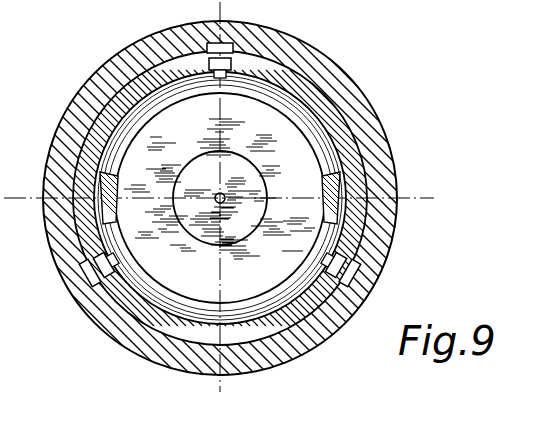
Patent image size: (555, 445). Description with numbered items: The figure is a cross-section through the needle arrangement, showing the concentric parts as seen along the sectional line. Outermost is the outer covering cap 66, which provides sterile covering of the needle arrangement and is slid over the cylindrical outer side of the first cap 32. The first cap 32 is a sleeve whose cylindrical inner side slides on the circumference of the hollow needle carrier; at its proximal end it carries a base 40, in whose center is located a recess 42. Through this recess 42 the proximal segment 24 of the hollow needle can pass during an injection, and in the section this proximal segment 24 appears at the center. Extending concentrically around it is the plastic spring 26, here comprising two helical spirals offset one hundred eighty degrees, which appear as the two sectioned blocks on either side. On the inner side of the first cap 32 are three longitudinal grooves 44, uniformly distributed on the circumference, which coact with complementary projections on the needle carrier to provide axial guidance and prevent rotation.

The outer covering cap 66 is at (358, 121).
The first cap 32 is at (347, 151).
The base 40 is at (272, 141).
The recess 42 is at (190, 170).
The proximal segment of hollow needle 24 is at (224, 196).
The plastic spring 26 is at (119, 207).
The longitudinal grooves 44 is at (229, 70).